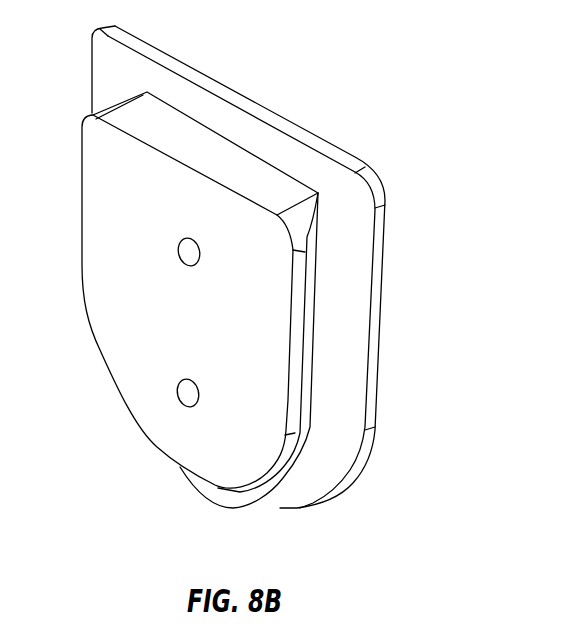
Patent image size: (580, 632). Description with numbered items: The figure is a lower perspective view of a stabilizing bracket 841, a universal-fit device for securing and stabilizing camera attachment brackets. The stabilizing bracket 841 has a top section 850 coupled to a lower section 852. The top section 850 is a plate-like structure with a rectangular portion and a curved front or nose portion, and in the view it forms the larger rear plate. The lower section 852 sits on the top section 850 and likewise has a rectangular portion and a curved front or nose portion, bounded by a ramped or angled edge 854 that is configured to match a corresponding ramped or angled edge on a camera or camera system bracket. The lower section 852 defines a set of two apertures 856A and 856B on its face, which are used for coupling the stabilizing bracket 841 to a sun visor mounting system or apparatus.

The stabilizing bracket 841 is at (414, 146).
The top section 850 is at (279, 90).
The lower section 852 is at (164, 280).
The ramped or angled edge 854 is at (320, 284).
The aperture 856A is at (191, 270).
The aperture 856B is at (181, 410).